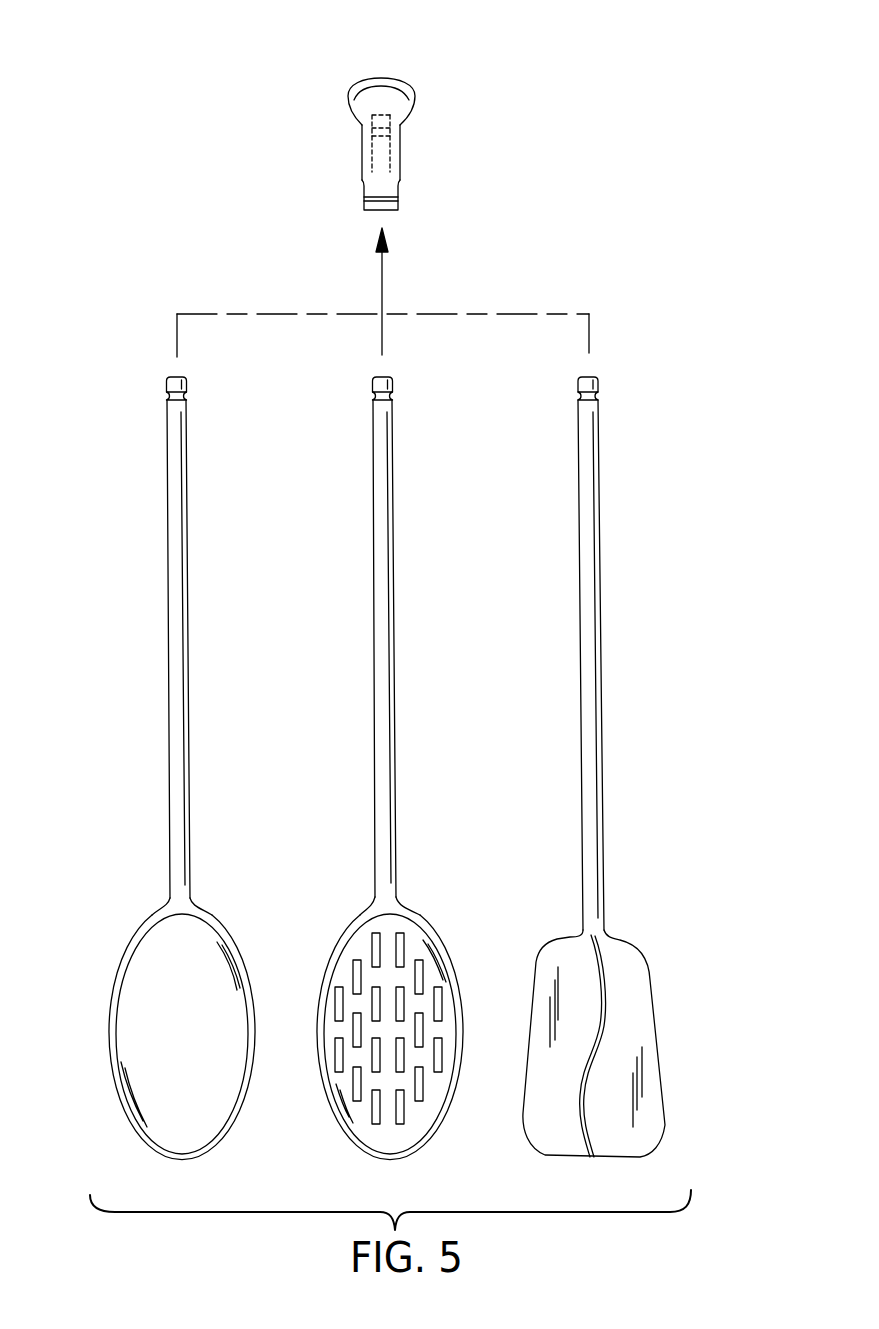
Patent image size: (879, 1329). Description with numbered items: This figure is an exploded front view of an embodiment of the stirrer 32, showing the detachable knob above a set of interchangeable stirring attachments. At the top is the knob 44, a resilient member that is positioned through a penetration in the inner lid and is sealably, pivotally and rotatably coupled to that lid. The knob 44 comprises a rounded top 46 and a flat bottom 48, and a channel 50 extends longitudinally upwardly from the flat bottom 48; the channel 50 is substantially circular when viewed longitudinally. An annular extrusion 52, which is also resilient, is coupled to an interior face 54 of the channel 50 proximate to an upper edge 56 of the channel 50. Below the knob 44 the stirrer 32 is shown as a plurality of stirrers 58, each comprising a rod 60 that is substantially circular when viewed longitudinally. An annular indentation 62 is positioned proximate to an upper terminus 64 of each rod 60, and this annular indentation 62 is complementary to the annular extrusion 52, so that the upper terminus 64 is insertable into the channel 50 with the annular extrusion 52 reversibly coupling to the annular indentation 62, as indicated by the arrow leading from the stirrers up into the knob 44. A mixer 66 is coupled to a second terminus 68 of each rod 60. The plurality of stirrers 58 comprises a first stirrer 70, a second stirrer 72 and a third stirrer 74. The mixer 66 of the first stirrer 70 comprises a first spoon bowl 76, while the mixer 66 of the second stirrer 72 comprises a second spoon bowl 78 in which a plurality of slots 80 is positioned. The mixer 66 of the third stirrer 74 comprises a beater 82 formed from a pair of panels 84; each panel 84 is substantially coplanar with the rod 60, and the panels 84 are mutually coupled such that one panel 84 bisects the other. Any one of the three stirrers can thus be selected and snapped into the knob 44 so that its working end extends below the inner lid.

The stirrer 32 is at (602, 764).
The knob 44 is at (400, 153).
The rounded top 46 is at (378, 78).
The flat bottom 48 is at (394, 212).
The channel 50 is at (377, 157).
The annular extrusion 52 is at (393, 130).
The interior face 54 is at (388, 168).
The upper edge 56 is at (376, 110).
The plurality of stirrers 58 is at (556, 275).
The rod 60 is at (374, 723).
The annular indentation 62 is at (189, 394).
The upper terminus 64 is at (171, 377).
The mixer 66 is at (354, 1043).
The second terminus 68 is at (167, 899).
The first stirrer 70 is at (168, 589).
The second stirrer 72 is at (374, 582).
The third stirrer 74 is at (580, 598).
The first spoon bowl 76 is at (166, 977).
The second spoon bowl 78 is at (367, 1000).
The plurality of slots 80 is at (441, 996).
The beater 82 is at (622, 1030).
The panels 84 is at (628, 996).